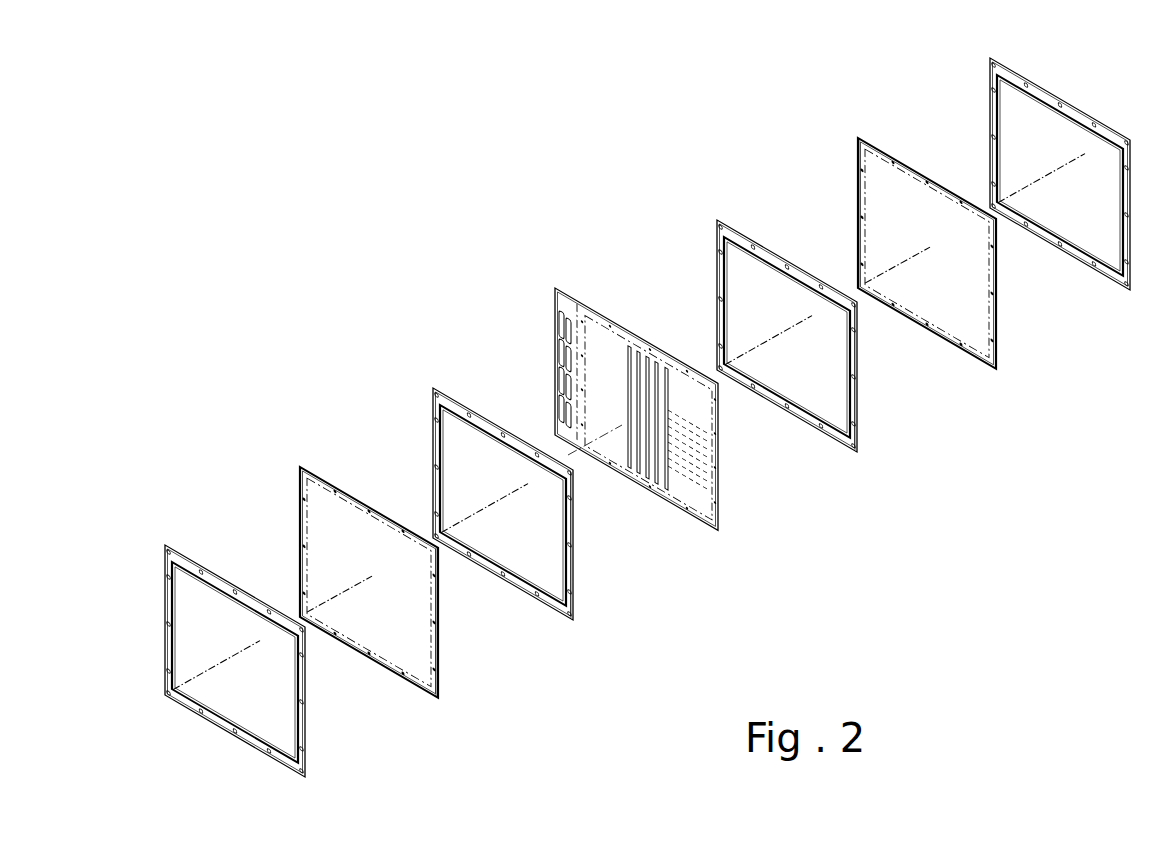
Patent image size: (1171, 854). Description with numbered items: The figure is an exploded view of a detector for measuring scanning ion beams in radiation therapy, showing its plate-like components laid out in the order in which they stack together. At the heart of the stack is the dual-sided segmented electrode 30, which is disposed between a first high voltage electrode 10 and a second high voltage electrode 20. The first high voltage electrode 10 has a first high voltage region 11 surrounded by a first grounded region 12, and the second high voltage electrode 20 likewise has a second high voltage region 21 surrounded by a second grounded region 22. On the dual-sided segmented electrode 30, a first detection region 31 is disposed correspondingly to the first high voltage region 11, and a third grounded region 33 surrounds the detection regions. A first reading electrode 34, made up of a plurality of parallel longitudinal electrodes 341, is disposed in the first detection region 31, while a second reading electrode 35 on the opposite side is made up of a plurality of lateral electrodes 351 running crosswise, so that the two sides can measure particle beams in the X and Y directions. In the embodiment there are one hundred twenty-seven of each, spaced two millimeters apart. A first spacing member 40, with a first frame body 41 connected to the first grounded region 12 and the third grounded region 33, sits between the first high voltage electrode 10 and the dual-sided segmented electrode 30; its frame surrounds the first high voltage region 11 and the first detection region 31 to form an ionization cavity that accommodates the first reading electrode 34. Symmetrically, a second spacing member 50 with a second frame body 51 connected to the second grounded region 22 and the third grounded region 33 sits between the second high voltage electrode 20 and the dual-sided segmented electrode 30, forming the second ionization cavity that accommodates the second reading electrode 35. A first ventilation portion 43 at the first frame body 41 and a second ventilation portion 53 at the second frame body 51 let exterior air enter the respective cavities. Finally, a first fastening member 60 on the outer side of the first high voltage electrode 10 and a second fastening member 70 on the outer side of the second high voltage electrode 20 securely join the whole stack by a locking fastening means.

The first high voltage electrode 10 is at (375, 573).
The first high voltage region 11 is at (398, 653).
The first grounded region 12 is at (438, 642).
The second high voltage electrode 20 is at (889, 219).
The second high voltage region 21 is at (893, 180).
The second grounded region 22 is at (858, 192).
The dual-sided segmented electrode 30 is at (658, 393).
The first detection region 31 is at (603, 335).
The third grounded region 33 is at (625, 323).
The first reading electrode 34 is at (634, 442).
The longitudinal electrodes 341 is at (625, 457).
The second reading electrode 35 is at (753, 496).
The lateral electrodes 351 is at (720, 488).
The first spacing member 40 is at (467, 466).
The first frame body 41 is at (453, 400).
The first ventilation portion 43 is at (567, 484).
The second spacing member 50 is at (773, 297).
The second frame body 51 is at (740, 240).
The second ventilation portion 53 is at (857, 318).
The first fastening member 60 is at (208, 718).
The second fastening member 70 is at (1097, 118).